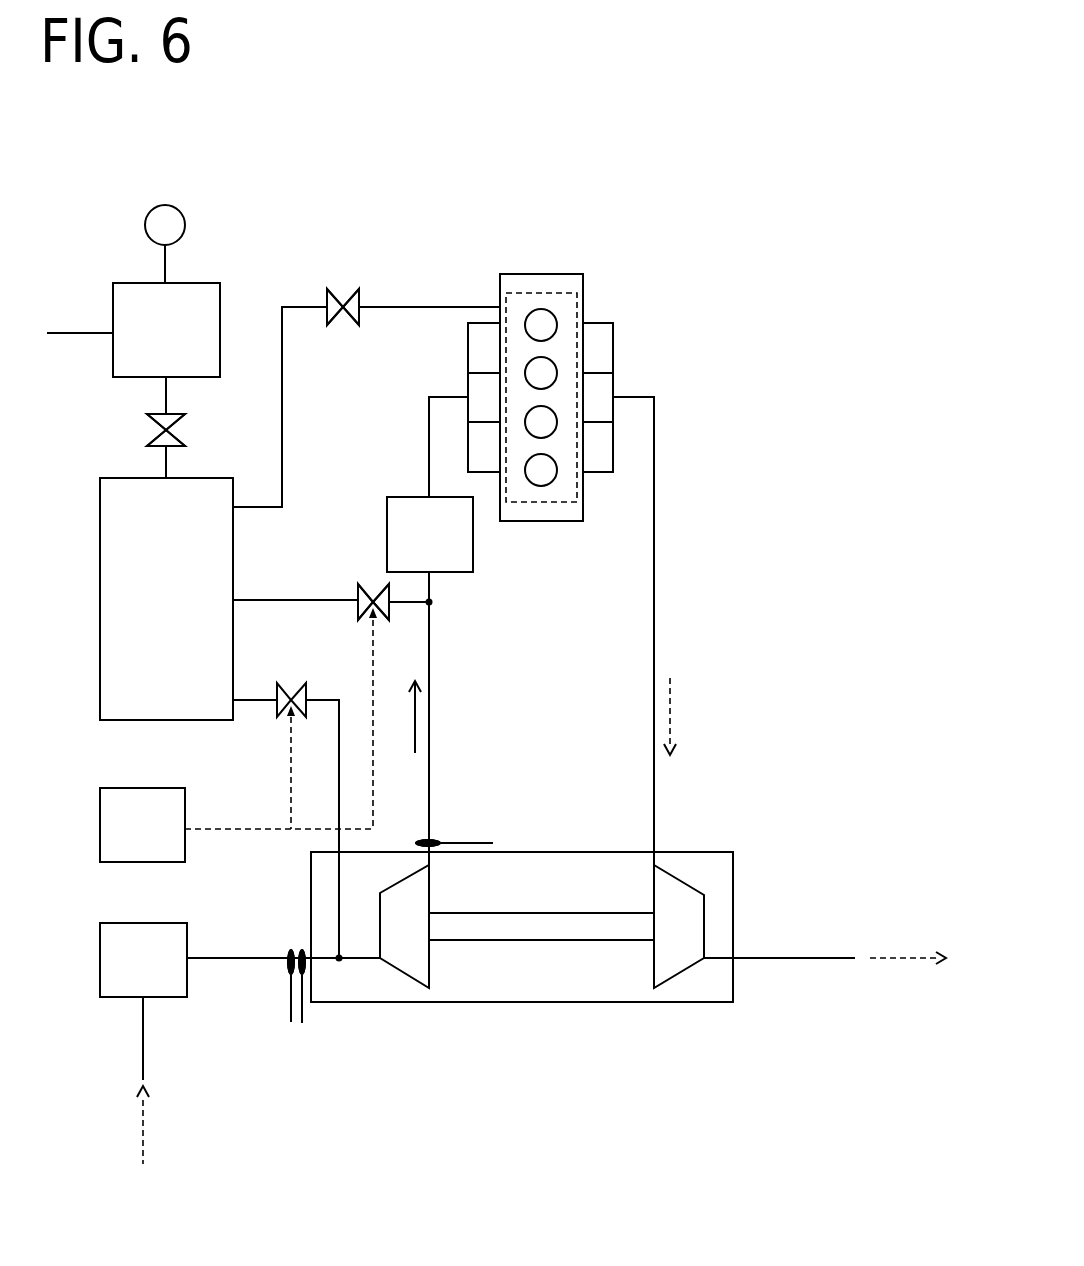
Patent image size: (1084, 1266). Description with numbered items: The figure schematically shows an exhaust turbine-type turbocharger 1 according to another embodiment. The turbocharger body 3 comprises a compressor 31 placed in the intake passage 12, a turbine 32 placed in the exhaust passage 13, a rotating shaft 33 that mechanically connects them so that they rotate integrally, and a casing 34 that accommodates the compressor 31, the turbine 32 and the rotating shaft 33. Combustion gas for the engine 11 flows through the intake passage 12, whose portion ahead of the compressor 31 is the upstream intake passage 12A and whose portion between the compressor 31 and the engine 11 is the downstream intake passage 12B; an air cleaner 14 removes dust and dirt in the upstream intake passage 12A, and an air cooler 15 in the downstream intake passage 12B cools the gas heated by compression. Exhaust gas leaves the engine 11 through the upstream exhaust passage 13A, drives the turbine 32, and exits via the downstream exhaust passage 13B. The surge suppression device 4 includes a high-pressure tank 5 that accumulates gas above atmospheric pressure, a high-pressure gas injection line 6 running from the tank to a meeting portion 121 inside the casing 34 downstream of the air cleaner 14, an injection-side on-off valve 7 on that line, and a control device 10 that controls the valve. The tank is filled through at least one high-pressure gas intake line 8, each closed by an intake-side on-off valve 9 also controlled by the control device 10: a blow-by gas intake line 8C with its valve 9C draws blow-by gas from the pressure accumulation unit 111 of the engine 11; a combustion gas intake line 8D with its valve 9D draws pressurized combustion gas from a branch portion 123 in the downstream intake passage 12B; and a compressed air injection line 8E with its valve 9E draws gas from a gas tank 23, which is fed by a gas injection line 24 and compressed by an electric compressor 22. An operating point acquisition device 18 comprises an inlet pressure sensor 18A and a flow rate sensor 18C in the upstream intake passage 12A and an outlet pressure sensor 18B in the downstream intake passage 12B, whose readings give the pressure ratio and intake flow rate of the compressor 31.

The turbocharger 1 is at (242, 134).
The turbocharger body 3 is at (484, 1012).
The surge suppression device 4 is at (90, 550).
The high-pressure tank 5 is at (100, 606).
The high-pressure gas injection line 6 is at (339, 881).
The injection-side on-off valve 7 is at (277, 692).
The high-pressure gas intake line 8 is at (167, 393).
The blow-by gas intake line 8C is at (437, 307).
The combustion gas intake line 8D is at (293, 600).
The compressed air injection line 8E is at (175, 406).
The intake-side on-off valve 9 is at (179, 433).
The intake-side on-off valve 9C is at (352, 290).
The intake-side on-off valve 9D is at (375, 583).
The intake-side on-off valve 9E is at (183, 443).
The control device 10 is at (146, 788).
The engine 11 is at (515, 274).
The pressure accumulation unit 111 is at (563, 293).
The intake passage 12 is at (429, 752).
The upstream intake passage 12A is at (225, 960).
The downstream intake passage 12B is at (429, 792).
The meeting portion 121 is at (339, 963).
The branch portion 123 is at (434, 602).
The exhaust passage 13 is at (654, 606).
The upstream exhaust passage 13A is at (654, 533).
The downstream exhaust passage 13B is at (811, 960).
The air cleaner 14 is at (165, 997).
The air cooler 15 is at (473, 540).
The operating point acquisition device 18 is at (336, 1008).
The inlet pressure sensor 18A is at (292, 1020).
The outlet pressure sensor 18B is at (470, 843).
The flow rate sensor 18C is at (304, 1012).
The electric compressor 22 is at (165, 205).
The gas tank 23 is at (201, 283).
The gas injection line 24 is at (79, 333).
The compressor 31 is at (410, 976).
The turbine 32 is at (683, 976).
The rotating shaft 33 is at (562, 941).
The casing 34 is at (388, 1002).